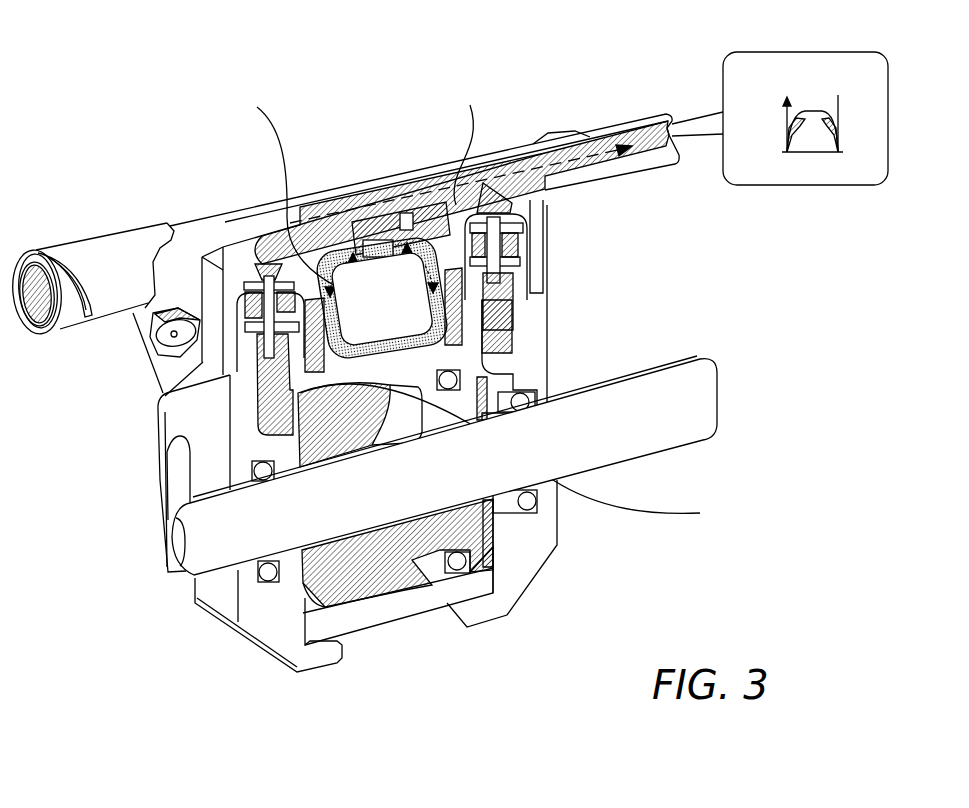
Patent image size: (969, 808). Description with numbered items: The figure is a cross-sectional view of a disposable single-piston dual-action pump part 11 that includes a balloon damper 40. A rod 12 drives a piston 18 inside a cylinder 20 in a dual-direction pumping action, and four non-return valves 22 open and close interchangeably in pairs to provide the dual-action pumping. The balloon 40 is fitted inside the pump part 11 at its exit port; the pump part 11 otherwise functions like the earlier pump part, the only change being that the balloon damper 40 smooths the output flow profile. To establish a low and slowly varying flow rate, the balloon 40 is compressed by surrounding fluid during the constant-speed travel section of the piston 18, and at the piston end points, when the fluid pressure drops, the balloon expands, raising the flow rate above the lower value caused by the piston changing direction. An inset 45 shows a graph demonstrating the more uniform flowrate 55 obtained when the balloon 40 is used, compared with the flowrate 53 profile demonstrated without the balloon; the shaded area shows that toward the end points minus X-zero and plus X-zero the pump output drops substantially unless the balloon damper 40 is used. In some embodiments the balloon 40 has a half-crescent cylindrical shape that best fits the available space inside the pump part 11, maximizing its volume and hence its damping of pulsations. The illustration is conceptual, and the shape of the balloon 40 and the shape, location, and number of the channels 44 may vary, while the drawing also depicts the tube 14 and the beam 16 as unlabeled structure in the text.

The pump part 11 is at (114, 156).
The rod 12 is at (667, 448).
The inlet tube 14 is at (60, 247).
The manifold beam 16 is at (650, 167).
The piston 18 is at (403, 560).
The cylinder 20 is at (337, 570).
The non-return valves 22 is at (497, 260).
The balloon damper 40 is at (402, 316).
The channels 44 is at (330, 296).
The inset 45 is at (878, 88).
The flowrate 53 is at (818, 113).
The flowrate 55 is at (800, 118).